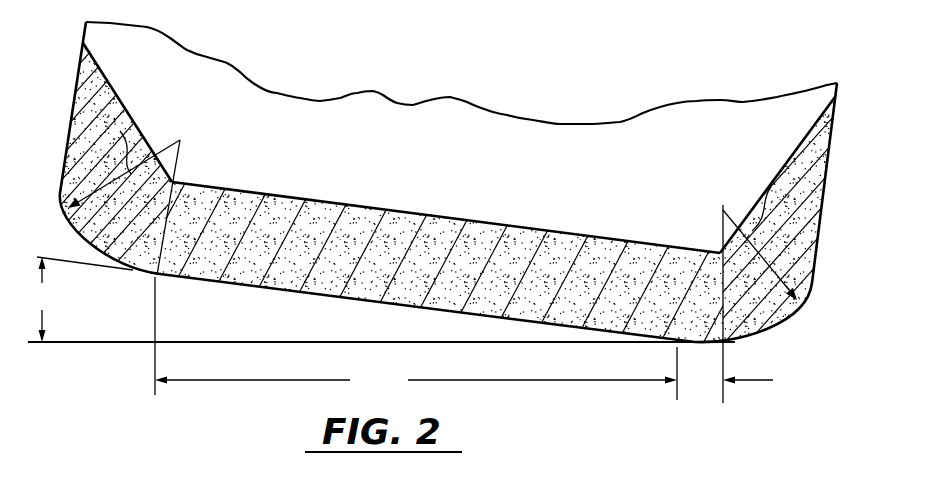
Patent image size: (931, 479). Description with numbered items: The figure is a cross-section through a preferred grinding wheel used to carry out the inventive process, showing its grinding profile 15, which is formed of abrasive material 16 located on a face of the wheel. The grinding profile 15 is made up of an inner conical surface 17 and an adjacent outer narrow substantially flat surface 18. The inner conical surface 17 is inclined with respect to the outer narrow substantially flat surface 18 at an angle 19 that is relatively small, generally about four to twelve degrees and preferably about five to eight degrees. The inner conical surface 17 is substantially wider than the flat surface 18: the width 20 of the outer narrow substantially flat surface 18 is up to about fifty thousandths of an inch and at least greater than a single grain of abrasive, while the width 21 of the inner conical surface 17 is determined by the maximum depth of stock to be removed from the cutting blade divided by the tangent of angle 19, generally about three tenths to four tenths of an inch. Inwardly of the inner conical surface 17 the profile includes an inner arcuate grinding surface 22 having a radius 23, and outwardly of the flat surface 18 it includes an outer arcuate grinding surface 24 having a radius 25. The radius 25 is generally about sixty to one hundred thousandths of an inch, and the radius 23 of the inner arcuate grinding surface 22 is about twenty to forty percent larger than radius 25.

The grinding profile 15 is at (369, 305).
The abrasive material 16 is at (810, 230).
The inner conical surface 17 is at (258, 287).
The outer narrow substantially flat surface 18 is at (698, 343).
The angle 19 is at (80, 299).
The width of the outer narrow substantially flat surface 20 is at (730, 382).
The width of the inner conical surface 21 is at (416, 338).
The inner arcuate grinding surface 22 is at (88, 242).
The radius 23 is at (130, 114).
The outer arcuate grinding surface 24 is at (767, 326).
The radius 25 is at (773, 187).